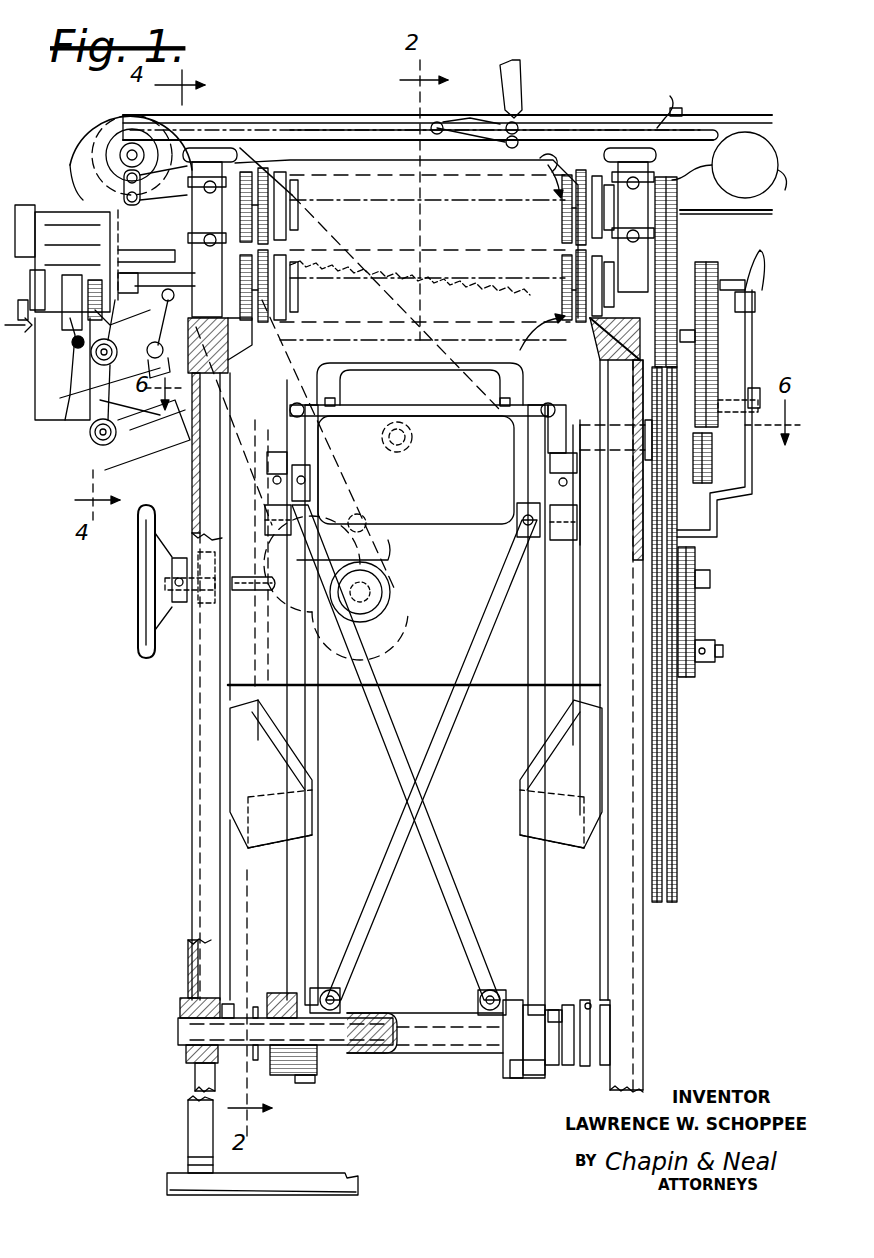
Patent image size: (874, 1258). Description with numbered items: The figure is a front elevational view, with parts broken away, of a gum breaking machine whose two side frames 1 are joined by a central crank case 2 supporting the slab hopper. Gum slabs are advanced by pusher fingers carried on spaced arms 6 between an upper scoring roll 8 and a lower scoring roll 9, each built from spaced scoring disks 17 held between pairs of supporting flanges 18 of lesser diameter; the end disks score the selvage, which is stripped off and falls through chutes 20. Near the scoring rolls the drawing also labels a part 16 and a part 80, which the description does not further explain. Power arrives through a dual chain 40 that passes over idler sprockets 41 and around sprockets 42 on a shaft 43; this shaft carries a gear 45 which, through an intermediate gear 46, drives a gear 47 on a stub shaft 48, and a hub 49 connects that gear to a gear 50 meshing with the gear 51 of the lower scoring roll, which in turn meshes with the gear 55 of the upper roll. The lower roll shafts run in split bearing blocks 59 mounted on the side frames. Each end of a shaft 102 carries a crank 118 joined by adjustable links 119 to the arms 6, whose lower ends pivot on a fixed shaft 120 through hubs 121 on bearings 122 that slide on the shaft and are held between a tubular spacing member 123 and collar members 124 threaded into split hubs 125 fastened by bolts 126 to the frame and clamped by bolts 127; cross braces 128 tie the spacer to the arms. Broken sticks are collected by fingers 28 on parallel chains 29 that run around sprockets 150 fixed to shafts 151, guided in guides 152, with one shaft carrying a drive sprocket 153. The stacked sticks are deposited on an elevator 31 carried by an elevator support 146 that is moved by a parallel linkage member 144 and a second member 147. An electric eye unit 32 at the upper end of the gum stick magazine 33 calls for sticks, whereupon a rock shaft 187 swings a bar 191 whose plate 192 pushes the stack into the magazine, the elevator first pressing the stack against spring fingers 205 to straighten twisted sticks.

The side frames 1 is at (196, 848).
The central crank case 2 is at (330, 680).
The spaced arms 6 is at (320, 895).
The upper scoring roll 8 is at (545, 171).
The lower scoring roll 9 is at (542, 335).
The bracket 16 is at (155, 255).
The scoring disks 17 is at (562, 212).
The supporting flanges 18 is at (566, 235).
The chutes 20 is at (290, 345).
The fingers 28 is at (522, 80).
The parallel chains 29 is at (585, 118).
The elevator 31 is at (121, 360).
The electric eye unit 32 is at (57, 280).
The gum stick magazine 33 is at (75, 376).
The dual chain 40 is at (662, 850).
The idler sprockets 41 is at (650, 552).
The sprockets 42 is at (650, 395).
The shaft 43 is at (620, 455).
The gear 45 is at (712, 478).
The intermediate gear 46 is at (715, 425).
The gear 47 is at (735, 280).
The stub shaft 48 is at (750, 281).
The hub 49 is at (700, 285).
The gear 50 is at (595, 360).
The gear 51 is at (680, 270).
The gear 55 is at (729, 165).
The split bearing blocks 59 is at (434, 324).
The bracket 80 is at (215, 150).
The shaft 102 is at (570, 430).
The crank 118 is at (325, 455).
The adjustable links 119 is at (265, 493).
The fixed shaft 120 is at (180, 1028).
The hubs 121 is at (318, 988).
The bearings 122 is at (280, 1075).
The tubular spacing member 123 is at (413, 1028).
The collar members 124 is at (258, 995).
The split hubs 125 is at (235, 1060).
The bolts 126 is at (240, 1060).
The bolts 127 is at (228, 1004).
The cross braces 128 is at (462, 912).
The member of parallel linkage 144 is at (206, 512).
The elevator support 146 is at (90, 432).
The second member of parallel linkage 147 is at (147, 435).
The sprockets 150 is at (125, 157).
The shafts 151 is at (118, 150).
The guides 152 is at (660, 110).
The drive sprocket 153 is at (112, 115).
The rock shaft 187 is at (89, 391).
The bar 191 is at (156, 272).
The plate 192 is at (134, 317).
The spring fingers 205 is at (120, 195).